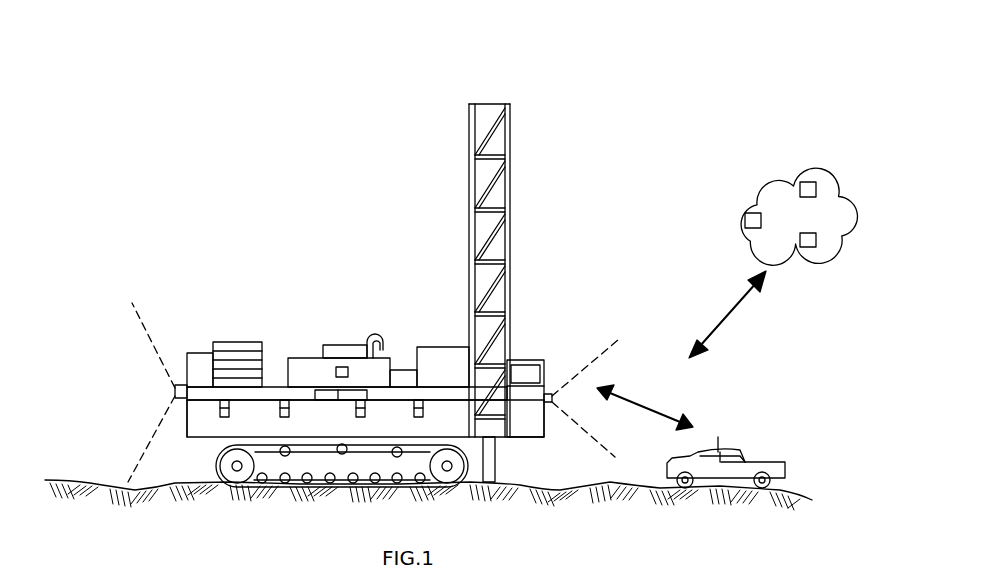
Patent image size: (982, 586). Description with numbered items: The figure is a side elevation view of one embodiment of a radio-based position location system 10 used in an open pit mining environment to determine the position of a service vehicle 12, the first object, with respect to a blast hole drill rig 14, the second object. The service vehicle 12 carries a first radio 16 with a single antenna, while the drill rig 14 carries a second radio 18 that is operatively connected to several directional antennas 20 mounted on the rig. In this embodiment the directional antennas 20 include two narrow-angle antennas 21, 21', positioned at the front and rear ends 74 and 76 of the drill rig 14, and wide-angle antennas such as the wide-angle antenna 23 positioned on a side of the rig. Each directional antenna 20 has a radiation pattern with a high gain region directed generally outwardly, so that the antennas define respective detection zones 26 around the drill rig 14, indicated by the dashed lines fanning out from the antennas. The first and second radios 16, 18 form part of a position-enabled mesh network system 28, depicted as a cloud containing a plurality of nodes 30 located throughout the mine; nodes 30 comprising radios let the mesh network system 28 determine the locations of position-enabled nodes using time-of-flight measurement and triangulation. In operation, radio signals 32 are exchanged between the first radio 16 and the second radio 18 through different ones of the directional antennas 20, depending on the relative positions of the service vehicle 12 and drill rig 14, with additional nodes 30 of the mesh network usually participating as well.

The position location system 10 is at (173, 140).
The service vehicle 12 is at (789, 463).
The drill rig 14 is at (241, 340).
The first radio 16 is at (719, 438).
The second radio 18 is at (336, 372).
The directional antennas 20 is at (173, 391).
The narrow-angle antenna 21 is at (561, 360).
The narrow-angle antenna 21' is at (142, 415).
The wide-angle antenna 23 is at (367, 396).
The detection zones 26 is at (146, 326).
The mesh network system 28 is at (775, 160).
The nodes 30 is at (810, 197).
The radio signals 32 is at (728, 313).
The front end 74 is at (528, 440).
The rear end 76 is at (188, 437).